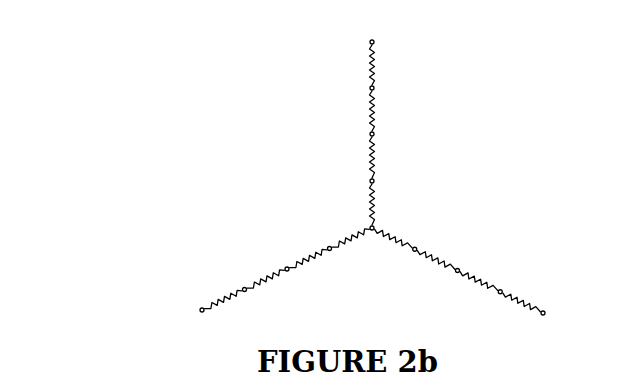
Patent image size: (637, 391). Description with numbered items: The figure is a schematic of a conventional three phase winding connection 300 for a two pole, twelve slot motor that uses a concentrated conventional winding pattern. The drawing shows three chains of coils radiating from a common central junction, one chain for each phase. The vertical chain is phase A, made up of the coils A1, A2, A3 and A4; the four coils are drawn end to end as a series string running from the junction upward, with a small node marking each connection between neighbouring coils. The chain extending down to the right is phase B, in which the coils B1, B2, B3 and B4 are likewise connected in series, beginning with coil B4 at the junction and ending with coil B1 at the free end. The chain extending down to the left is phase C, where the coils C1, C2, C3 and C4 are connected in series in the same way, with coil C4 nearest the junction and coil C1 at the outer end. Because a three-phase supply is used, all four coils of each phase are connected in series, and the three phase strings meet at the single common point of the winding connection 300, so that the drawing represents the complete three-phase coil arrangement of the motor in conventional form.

The three phase winding connection 300 is at (245, 130).
The coil A1 is at (391, 65).
The coil A2 is at (391, 113).
The coil A3 is at (391, 160).
The coil A4 is at (391, 207).
The coil B1 is at (523, 308).
The coil B2 is at (479, 289).
The coil B3 is at (436, 271).
The coil B4 is at (395, 246).
The coil C1 is at (217, 295).
The coil C2 is at (262, 273).
The coil C3 is at (306, 252).
The coil C4 is at (349, 234).